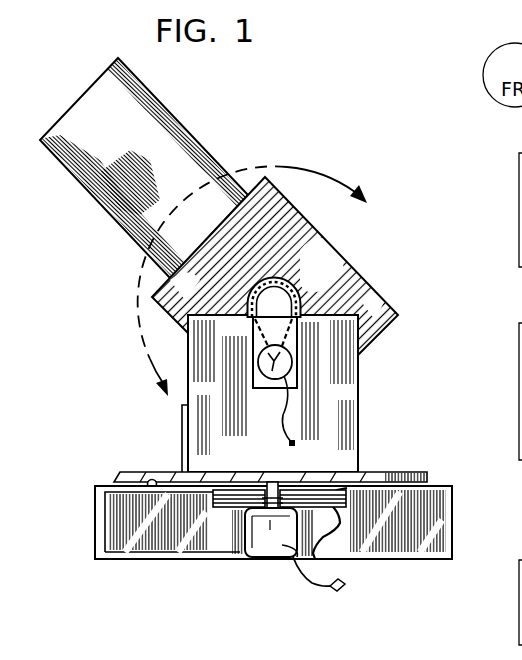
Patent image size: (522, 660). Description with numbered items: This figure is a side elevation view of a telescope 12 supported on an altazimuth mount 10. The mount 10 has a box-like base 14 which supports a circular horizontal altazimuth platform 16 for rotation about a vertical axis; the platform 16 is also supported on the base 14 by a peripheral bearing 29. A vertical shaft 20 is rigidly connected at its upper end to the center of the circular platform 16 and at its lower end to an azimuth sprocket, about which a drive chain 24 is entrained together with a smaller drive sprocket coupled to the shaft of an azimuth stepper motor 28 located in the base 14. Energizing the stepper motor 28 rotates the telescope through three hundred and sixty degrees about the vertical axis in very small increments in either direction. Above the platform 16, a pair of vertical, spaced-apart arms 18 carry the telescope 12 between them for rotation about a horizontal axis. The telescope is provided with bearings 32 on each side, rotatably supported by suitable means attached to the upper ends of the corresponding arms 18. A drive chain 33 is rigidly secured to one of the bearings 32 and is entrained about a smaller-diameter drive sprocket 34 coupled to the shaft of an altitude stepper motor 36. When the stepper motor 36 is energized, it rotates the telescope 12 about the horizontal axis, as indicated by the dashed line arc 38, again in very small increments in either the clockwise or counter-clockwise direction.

The altazimuth mount 10 is at (112, 384).
The telescope 12 is at (172, 118).
The box-like base 14 is at (452, 521).
The altazimuth platform 16 is at (392, 473).
The vertical arms 18 is at (359, 420).
The vertical shaft 20 is at (273, 483).
The drive chain 24 is at (227, 510).
The azimuth stepper motor 28 is at (292, 559).
The peripheral bearing 29 is at (150, 480).
The bearings 32 is at (338, 252).
The drive chain 33 is at (258, 337).
The drive sprocket 34 is at (281, 368).
The altitude stepper motor 36 is at (277, 356).
The dashed line arc 38 is at (287, 168).